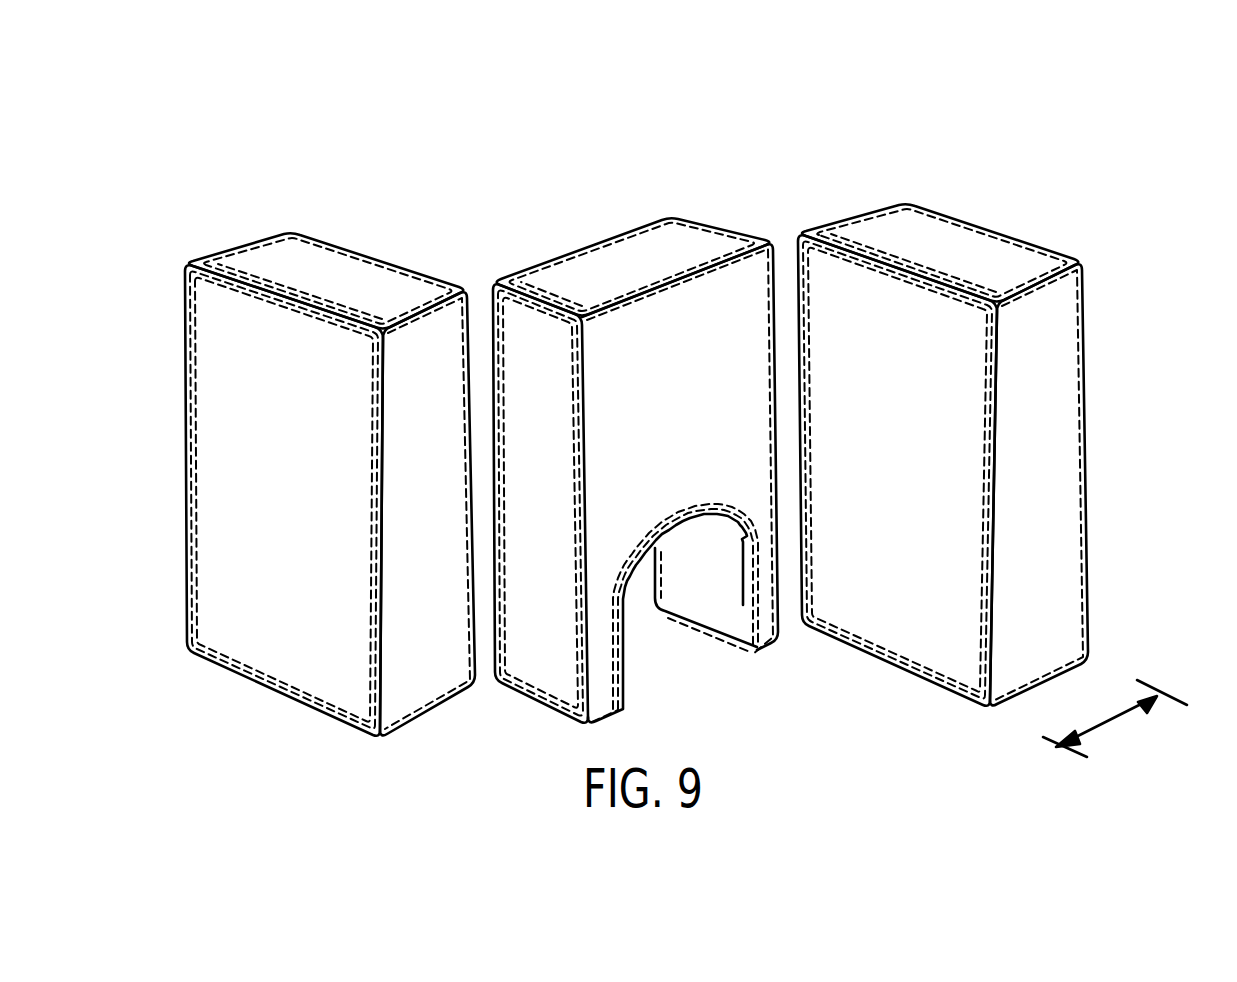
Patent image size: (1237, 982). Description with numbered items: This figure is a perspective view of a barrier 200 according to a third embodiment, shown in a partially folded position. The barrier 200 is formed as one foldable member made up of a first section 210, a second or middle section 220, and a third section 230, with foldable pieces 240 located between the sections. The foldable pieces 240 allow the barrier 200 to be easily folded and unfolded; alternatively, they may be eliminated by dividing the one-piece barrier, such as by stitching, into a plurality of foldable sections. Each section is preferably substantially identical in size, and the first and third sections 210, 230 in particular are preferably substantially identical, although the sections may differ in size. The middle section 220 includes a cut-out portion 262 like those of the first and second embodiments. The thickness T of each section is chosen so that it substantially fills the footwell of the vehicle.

The barrier 200 is at (950, 117).
The first section 210 is at (240, 452).
The second section 220 is at (635, 435).
The third section 230 is at (1043, 488).
The foldable pieces 240 is at (786, 258).
The cut-out portion 262 is at (707, 581).
The thickness T is at (1118, 718).